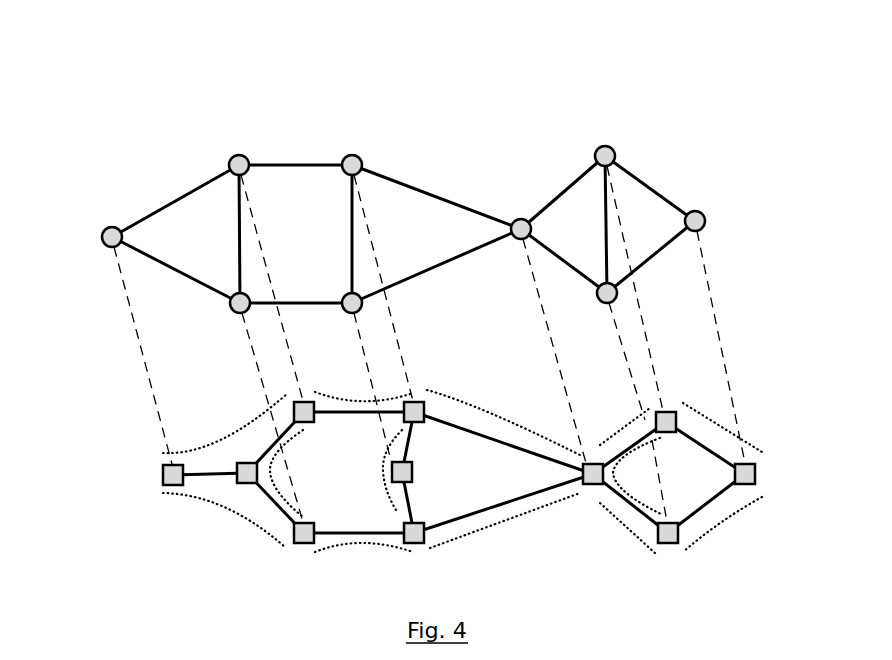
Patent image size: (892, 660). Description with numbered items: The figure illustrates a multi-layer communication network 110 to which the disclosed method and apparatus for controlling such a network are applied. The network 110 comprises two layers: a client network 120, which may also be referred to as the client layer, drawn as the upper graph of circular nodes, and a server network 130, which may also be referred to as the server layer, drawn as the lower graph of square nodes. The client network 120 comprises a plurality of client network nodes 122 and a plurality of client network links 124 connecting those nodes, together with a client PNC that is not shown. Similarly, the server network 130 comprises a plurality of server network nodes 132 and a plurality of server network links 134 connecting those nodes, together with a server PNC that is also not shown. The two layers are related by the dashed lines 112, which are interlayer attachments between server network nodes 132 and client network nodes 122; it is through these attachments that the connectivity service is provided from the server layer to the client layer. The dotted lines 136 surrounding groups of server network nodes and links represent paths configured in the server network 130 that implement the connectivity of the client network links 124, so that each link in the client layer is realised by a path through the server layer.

The multi-layer communication network 110 is at (420, 287).
The interlayer attachments 112 is at (723, 347).
The client network 120 is at (407, 225).
The client network node 122 is at (693, 222).
The client network link 124 is at (642, 180).
The server network 130 is at (401, 476).
The server network node 132 is at (173, 475).
The server network link 134 is at (638, 520).
The path configured in the server network 136 is at (247, 517).